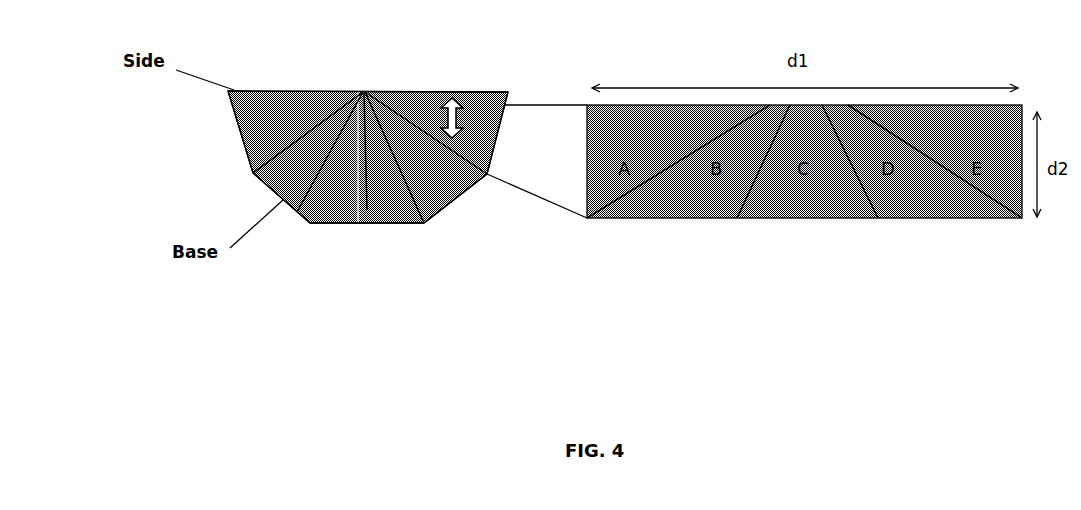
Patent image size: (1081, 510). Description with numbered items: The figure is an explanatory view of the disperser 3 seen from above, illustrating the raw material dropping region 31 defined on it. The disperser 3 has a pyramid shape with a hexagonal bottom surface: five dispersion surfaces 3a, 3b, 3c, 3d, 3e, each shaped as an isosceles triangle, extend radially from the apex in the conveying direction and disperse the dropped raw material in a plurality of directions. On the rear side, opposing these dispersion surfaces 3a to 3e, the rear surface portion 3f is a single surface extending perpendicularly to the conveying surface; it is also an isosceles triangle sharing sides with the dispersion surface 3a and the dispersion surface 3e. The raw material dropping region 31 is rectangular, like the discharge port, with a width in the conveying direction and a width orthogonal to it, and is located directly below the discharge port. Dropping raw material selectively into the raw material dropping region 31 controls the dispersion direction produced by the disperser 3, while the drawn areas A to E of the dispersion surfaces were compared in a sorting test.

The disperser 3 is at (480, 92).
The dispersion surface 3a is at (236, 117).
The dispersion surface 3b is at (295, 212).
The dispersion surface 3c is at (362, 223).
The dispersion surface 3d is at (454, 206).
The dispersion surface 3e is at (496, 131).
The rear surface portion 3f is at (356, 92).
The raw material dropping region 31 is at (243, 153).